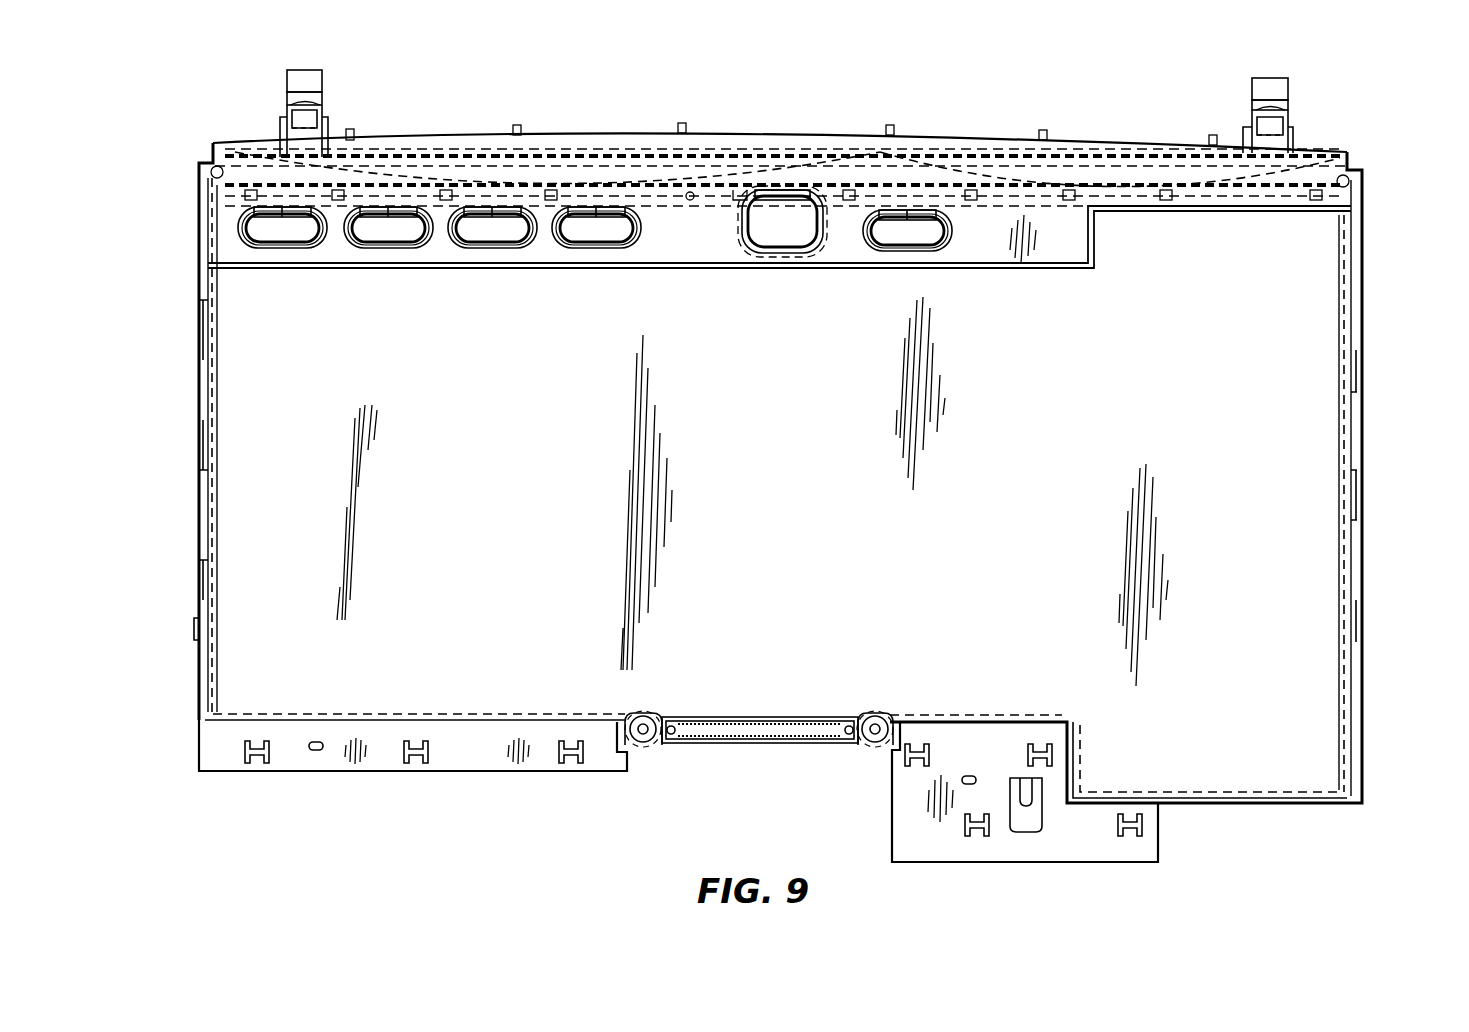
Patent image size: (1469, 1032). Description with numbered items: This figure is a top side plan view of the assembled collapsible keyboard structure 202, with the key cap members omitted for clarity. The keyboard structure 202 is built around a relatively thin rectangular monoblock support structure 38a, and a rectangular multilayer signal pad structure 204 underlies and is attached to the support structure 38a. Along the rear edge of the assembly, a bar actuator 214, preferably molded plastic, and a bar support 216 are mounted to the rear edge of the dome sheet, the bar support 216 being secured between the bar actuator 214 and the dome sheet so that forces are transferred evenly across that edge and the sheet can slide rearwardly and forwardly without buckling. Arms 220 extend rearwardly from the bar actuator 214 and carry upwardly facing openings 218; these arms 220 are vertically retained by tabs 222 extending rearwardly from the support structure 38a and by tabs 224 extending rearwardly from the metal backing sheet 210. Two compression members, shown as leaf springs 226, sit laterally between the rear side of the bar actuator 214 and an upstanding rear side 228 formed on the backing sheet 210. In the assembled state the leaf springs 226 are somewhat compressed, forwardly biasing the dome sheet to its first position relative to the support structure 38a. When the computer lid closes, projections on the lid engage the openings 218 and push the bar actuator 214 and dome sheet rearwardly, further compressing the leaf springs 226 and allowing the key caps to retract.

The keyboard structure 202 is at (1368, 634).
The signal pad structure 204 is at (196, 630).
The metal backing sheet 210 is at (532, 780).
The bar actuator 214 is at (714, 180).
The bar support 216 is at (867, 180).
The openings 218 is at (293, 113).
The arms 220 is at (306, 96).
The tabs 222 is at (284, 135).
The tabs 224 is at (302, 70).
The leaf springs 226 is at (540, 150).
The rear side 228 is at (686, 158).
The support structure 38a is at (1280, 290).